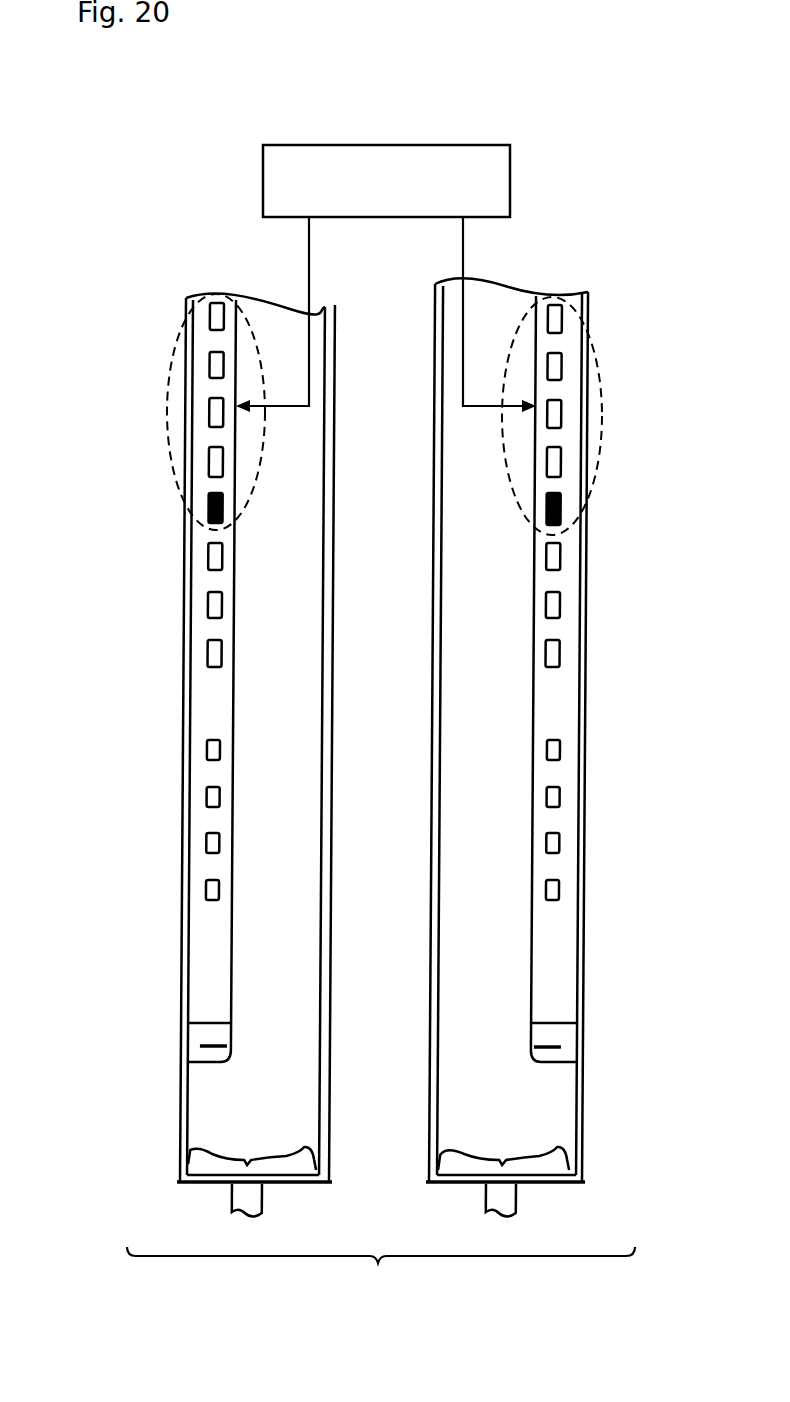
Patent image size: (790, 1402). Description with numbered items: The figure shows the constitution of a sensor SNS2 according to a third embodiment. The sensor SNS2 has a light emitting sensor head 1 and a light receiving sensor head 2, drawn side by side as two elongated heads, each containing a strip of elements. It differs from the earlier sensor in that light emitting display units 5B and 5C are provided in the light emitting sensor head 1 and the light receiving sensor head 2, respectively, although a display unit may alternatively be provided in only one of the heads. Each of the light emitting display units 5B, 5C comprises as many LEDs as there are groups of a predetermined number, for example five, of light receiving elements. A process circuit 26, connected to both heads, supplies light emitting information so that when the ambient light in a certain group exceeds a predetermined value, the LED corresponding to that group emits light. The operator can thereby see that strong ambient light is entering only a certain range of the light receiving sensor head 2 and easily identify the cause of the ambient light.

The process circuit 26 is at (453, 145).
The light emitting sensor head 1 is at (207, 1107).
The light receiving sensor head 2 is at (550, 1107).
The light emitting display unit 5B is at (168, 407).
The light emitting display unit 5C is at (602, 408).
The sensor SNS2 is at (381, 1272).